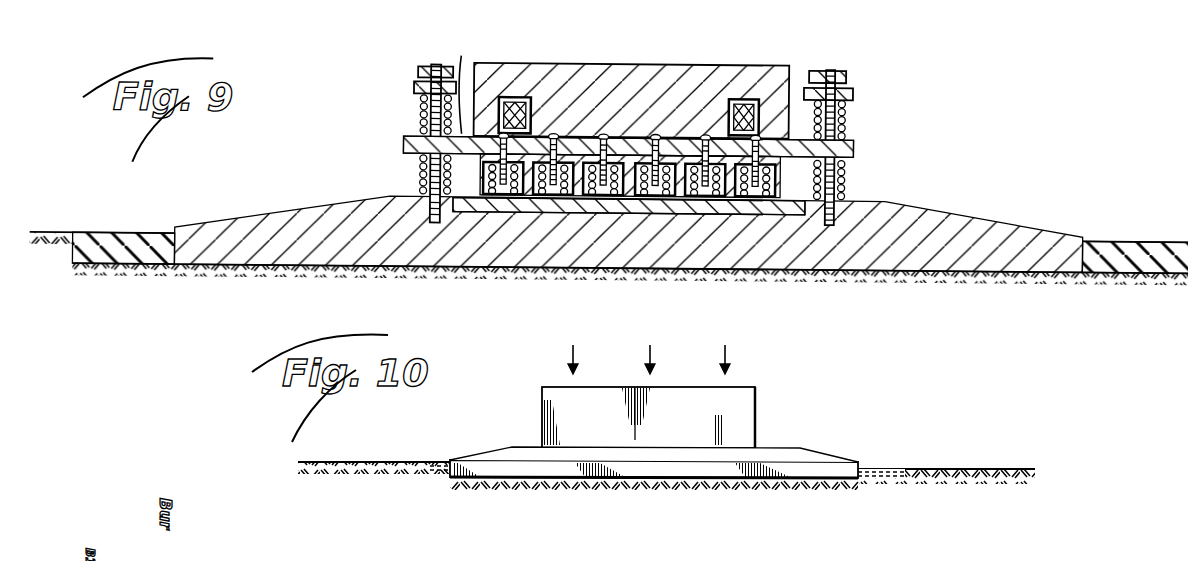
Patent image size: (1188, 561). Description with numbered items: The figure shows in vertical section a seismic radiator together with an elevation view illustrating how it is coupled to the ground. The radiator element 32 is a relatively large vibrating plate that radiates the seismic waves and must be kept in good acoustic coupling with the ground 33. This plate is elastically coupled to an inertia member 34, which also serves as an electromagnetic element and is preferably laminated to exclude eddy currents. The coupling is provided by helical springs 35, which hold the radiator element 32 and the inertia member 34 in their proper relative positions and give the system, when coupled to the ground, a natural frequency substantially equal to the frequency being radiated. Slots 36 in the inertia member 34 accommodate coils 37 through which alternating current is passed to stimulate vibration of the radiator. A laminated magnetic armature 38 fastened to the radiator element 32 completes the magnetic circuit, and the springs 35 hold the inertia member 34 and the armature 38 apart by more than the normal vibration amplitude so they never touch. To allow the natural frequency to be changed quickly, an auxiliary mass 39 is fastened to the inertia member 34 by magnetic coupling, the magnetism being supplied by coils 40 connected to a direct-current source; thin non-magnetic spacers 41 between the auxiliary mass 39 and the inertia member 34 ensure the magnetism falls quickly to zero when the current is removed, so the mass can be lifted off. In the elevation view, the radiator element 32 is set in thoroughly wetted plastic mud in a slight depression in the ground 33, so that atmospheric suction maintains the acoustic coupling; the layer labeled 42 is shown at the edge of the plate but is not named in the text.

In FIG. 9, the radiator element 32 is at (955, 222).
In FIG. 10, the radiator element 32 is at (800, 458).
In FIG. 9, the ground 33 is at (1003, 266).
In FIG. 10, the ground 33 is at (1012, 468).
In FIG. 9, the inertia member 34 is at (854, 146).
In FIG. 9, the springs 35 is at (841, 114).
In FIG. 9, the slots 36 is at (725, 180).
In FIG. 9, the coils 37 is at (680, 180).
In FIG. 9, the laminated magnetic armature 38 is at (598, 210).
In FIG. 9, the auxiliary mass 39 is at (625, 70).
In FIG. 9, the coils 40 is at (741, 108).
In FIG. 9, the non-magnetic spacers 41 is at (458, 82).
In FIG. 10, the fill layer 42 is at (878, 473).